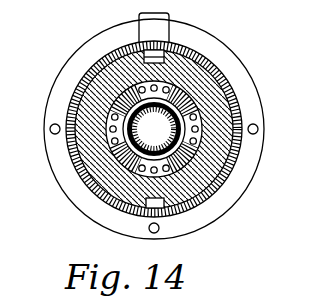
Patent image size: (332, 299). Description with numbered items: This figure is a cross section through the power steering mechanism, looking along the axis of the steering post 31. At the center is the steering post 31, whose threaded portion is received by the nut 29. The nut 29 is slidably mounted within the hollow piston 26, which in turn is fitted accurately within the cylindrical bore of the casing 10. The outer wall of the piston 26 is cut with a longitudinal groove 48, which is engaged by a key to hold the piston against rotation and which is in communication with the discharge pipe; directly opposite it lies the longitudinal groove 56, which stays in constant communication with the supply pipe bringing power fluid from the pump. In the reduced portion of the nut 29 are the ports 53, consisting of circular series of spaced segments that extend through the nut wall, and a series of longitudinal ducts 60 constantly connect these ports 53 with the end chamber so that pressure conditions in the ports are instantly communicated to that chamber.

The casing 10 is at (203, 62).
The piston 26 is at (213, 92).
The nut 29 is at (114, 165).
The steering post 31 is at (143, 106).
The longitudinal groove 48 is at (115, 50).
The ports 53 is at (105, 135).
The longitudinal groove 56 is at (186, 236).
The longitudinal ducts 60 is at (104, 137).